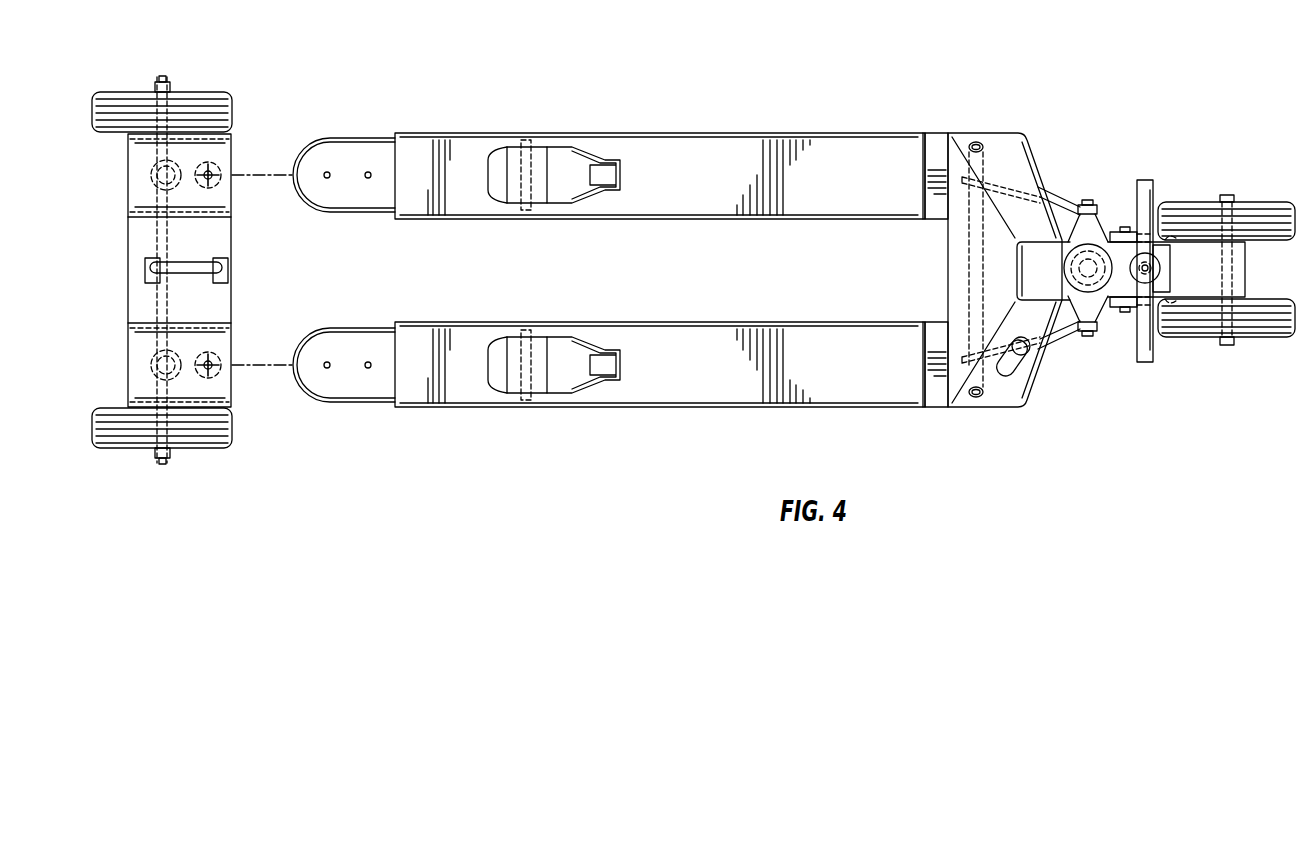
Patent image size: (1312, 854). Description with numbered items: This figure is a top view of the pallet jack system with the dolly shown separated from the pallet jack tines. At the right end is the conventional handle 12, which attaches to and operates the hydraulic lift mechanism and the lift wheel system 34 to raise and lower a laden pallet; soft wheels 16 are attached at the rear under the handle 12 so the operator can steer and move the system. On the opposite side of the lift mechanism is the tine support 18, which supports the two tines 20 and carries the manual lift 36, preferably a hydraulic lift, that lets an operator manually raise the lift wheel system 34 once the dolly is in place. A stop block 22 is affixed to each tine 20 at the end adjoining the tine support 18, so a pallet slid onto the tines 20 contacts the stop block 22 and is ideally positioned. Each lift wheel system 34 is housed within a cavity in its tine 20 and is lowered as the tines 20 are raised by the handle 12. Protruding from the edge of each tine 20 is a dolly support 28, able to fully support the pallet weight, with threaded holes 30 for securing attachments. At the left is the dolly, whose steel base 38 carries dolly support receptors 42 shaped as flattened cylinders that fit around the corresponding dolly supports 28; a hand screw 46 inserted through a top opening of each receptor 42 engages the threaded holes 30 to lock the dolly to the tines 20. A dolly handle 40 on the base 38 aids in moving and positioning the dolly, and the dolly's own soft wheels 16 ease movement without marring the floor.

The handle 12 is at (1142, 180).
The soft wheels 16 is at (190, 100).
The tine support 18 is at (1030, 320).
The tines 20 is at (660, 270).
The stop block 22 is at (937, 143).
The dolly support 28 is at (348, 178).
The threaded holes 30 is at (368, 170).
The lift wheel system 34 is at (537, 158).
The manual lift 36 is at (392, 338).
The base 38 is at (218, 232).
The dolly handle 40 is at (222, 268).
The dolly support receptors 42 is at (130, 181).
The hand screw 46 is at (210, 372).